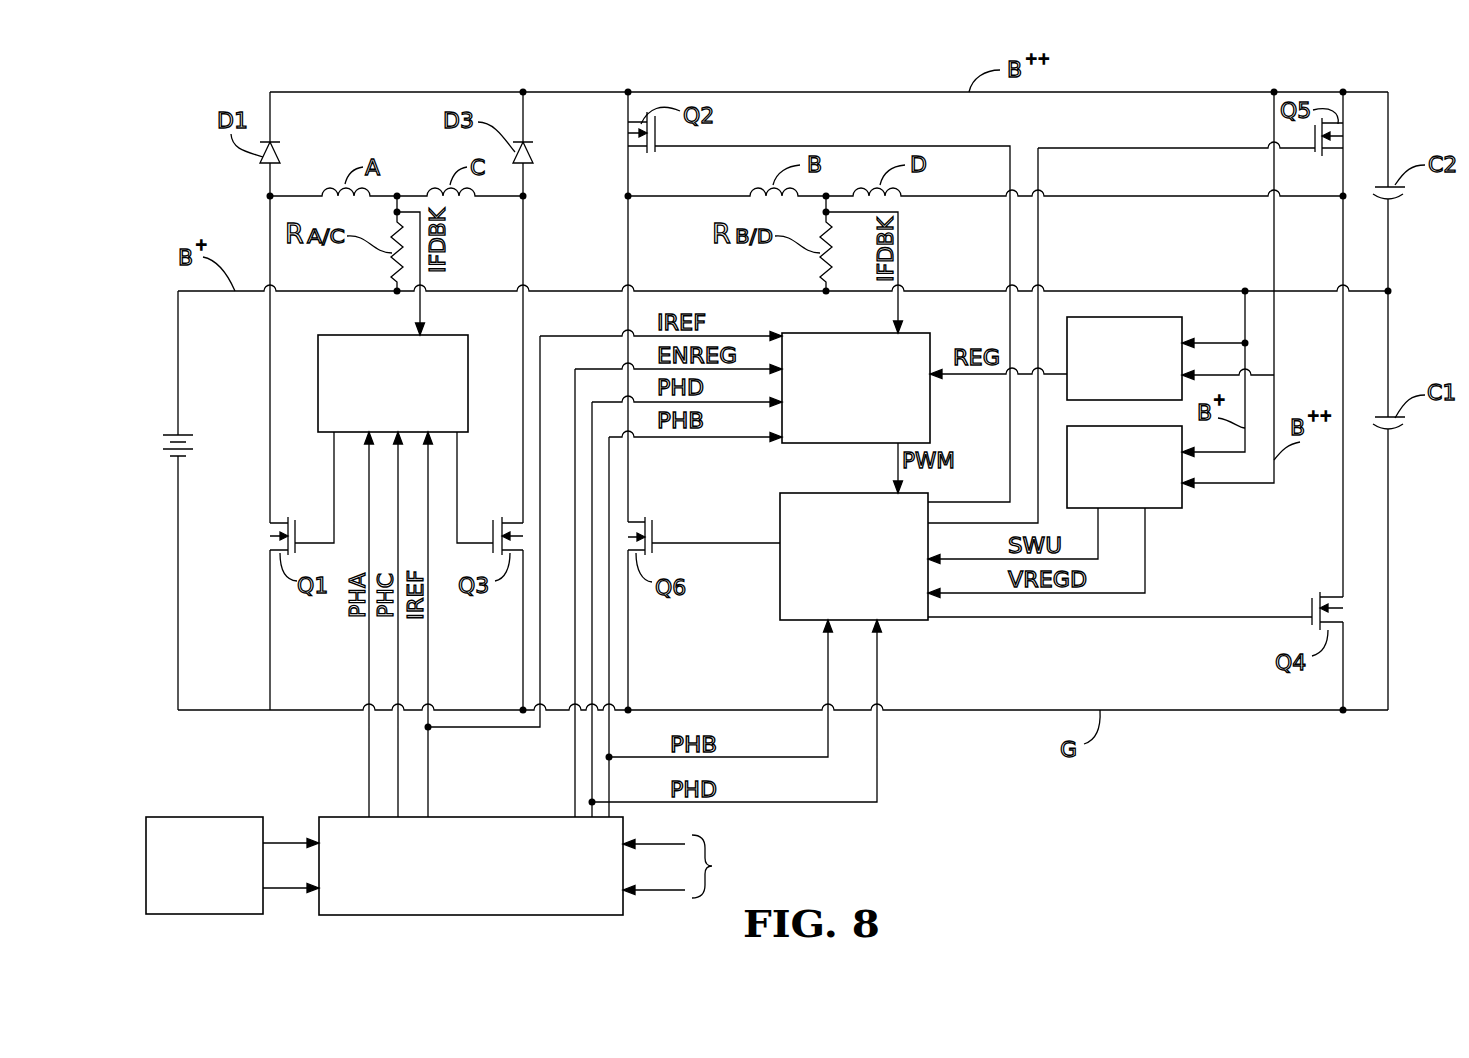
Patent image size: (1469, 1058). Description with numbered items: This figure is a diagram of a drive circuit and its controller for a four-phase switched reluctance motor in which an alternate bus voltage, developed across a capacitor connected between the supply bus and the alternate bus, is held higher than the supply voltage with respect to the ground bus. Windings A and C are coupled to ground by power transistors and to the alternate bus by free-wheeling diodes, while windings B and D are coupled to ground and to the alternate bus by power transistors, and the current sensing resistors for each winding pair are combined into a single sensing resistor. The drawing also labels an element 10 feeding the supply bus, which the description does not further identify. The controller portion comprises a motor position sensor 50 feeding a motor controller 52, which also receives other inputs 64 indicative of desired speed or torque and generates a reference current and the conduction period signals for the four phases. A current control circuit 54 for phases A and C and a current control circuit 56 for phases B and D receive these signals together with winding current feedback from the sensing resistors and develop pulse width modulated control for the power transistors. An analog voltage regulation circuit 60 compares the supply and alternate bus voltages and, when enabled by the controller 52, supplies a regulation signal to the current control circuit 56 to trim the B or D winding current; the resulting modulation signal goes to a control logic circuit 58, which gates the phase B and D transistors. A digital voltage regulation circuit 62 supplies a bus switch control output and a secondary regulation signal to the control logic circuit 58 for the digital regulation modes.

The battery 10 is at (178, 434).
The motor position sensor 50 is at (212, 817).
The motor controller 52 is at (517, 817).
The current control circuit for phases A and C 54 is at (340, 335).
The current control circuit for phases B and D 56 is at (803, 333).
The control logic circuit for phases B and D 58 is at (780, 520).
The analog voltage regulation circuit 60 is at (1125, 317).
The digital voltage regulation circuit 62 is at (1165, 508).
The other inputs 64 is at (712, 866).